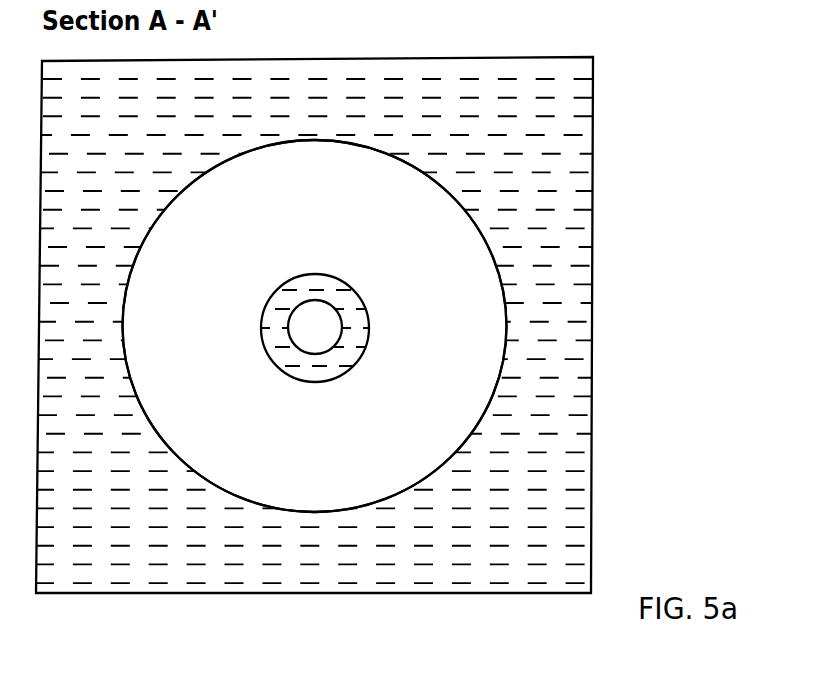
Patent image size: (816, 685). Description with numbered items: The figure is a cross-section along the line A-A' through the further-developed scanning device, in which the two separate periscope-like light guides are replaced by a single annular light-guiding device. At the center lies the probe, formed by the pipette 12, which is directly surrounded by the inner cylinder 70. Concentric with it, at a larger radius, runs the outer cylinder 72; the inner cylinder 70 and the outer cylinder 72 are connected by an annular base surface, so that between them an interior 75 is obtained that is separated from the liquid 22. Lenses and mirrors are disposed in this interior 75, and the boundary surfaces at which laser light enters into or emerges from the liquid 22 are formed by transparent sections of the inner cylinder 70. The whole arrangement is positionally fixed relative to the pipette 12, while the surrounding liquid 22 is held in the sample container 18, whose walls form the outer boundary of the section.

The sample container 18 is at (595, 273).
The liquid 22 is at (125, 174).
The outer cylinder 72 is at (198, 182).
The interior 75 is at (437, 357).
The inner cylinder 70 is at (340, 277).
The pipette 12 is at (314, 328).